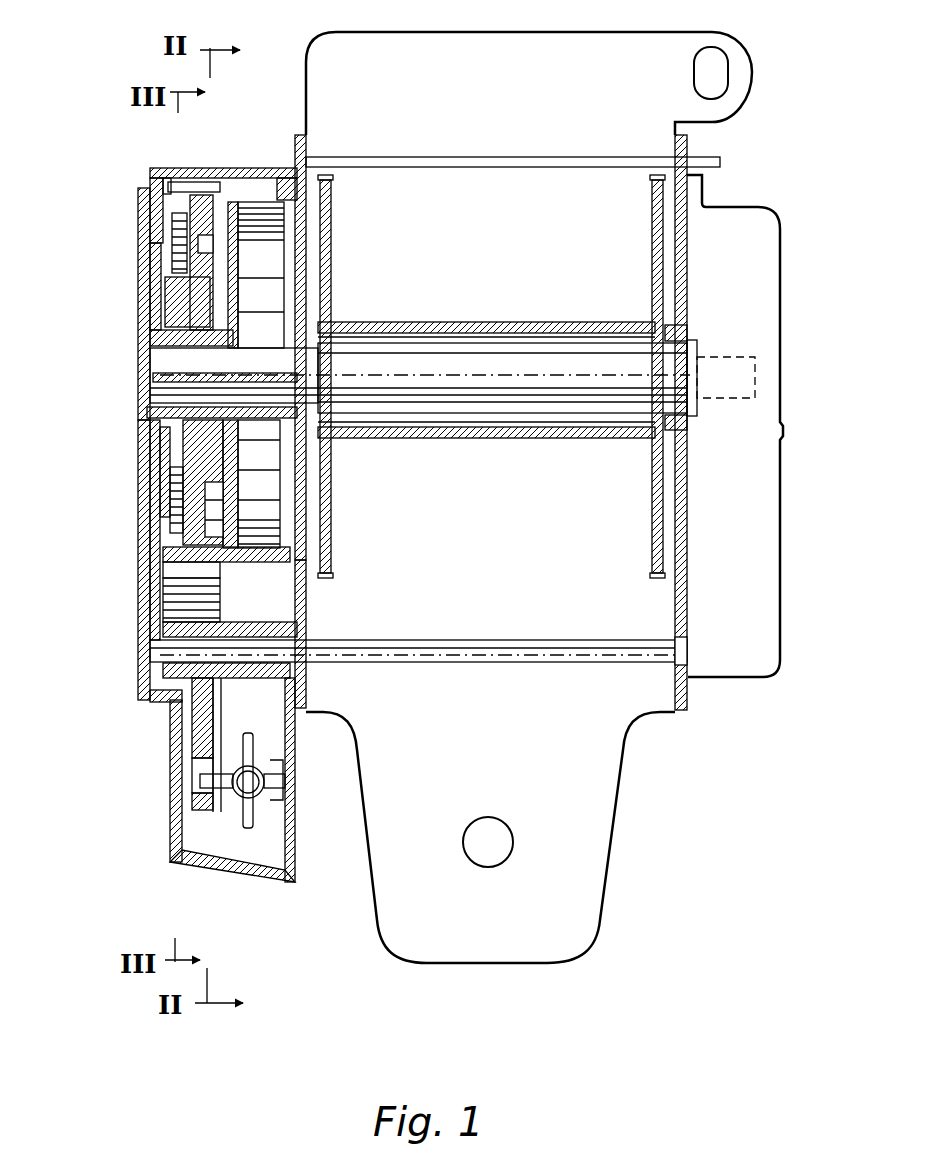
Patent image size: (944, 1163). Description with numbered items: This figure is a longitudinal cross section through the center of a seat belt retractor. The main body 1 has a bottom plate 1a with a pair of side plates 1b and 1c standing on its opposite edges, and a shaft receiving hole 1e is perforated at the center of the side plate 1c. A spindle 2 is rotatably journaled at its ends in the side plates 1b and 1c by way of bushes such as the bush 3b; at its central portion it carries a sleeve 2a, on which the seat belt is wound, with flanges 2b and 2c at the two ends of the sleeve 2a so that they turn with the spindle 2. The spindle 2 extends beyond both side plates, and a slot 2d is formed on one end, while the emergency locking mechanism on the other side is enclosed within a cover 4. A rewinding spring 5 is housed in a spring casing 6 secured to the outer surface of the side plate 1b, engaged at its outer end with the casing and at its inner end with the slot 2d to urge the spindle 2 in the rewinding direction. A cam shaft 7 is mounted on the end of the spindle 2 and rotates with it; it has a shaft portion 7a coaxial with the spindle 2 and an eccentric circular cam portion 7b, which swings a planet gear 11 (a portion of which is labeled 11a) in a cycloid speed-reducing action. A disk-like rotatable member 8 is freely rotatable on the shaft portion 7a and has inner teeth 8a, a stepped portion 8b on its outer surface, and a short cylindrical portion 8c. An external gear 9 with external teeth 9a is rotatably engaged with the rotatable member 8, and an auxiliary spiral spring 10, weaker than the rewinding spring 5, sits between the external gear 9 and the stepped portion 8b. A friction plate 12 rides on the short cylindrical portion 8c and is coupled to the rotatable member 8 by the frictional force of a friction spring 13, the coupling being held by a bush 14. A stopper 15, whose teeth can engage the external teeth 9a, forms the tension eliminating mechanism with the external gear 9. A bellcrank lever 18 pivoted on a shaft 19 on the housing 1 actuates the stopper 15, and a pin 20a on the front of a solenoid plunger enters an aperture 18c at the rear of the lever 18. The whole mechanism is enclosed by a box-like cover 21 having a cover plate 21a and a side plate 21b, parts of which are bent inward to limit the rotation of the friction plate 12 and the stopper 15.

The main body 1 is at (689, 250).
The bottom plate 1a is at (603, 783).
The side plate 1b is at (297, 615).
The side plate 1c is at (677, 603).
The shaft receiving hole 1e is at (688, 342).
The spindle 2 is at (527, 336).
The sleeve 2a is at (553, 440).
The flange 2b is at (331, 247).
The flange 2c is at (655, 232).
The slot 2d is at (297, 377).
The bush 3b is at (673, 333).
The cover 4 is at (768, 263).
The rewinding spring 5 is at (274, 473).
The spring casing 6 is at (256, 180).
The cam shaft 7 is at (139, 355).
The shaft portion 7a is at (153, 413).
The circular cam portion 7b is at (246, 484).
The rotatable member 8 is at (193, 195).
The inner teeth 8a is at (205, 248).
The stepped portion 8b is at (175, 268).
The short cylindrical portion 8c is at (150, 337).
The external gear 9 is at (175, 176).
The external teeth 9a is at (214, 187).
The auxiliary spiral spring 10 is at (175, 220).
The planet gear 11 is at (170, 468).
The friction plate portion 11a is at (209, 495).
The friction plate 12 is at (157, 500).
The friction spring 13 is at (152, 288).
The bush 14 is at (162, 447).
The stopper 15 is at (232, 598).
The bellcrank lever 18 is at (192, 728).
The aperture 18c is at (200, 773).
The shaft 19 is at (459, 641).
The pin 20a is at (221, 795).
The cover 21 is at (140, 563).
The cover plate 21a is at (143, 610).
The side plate 21b is at (243, 868).